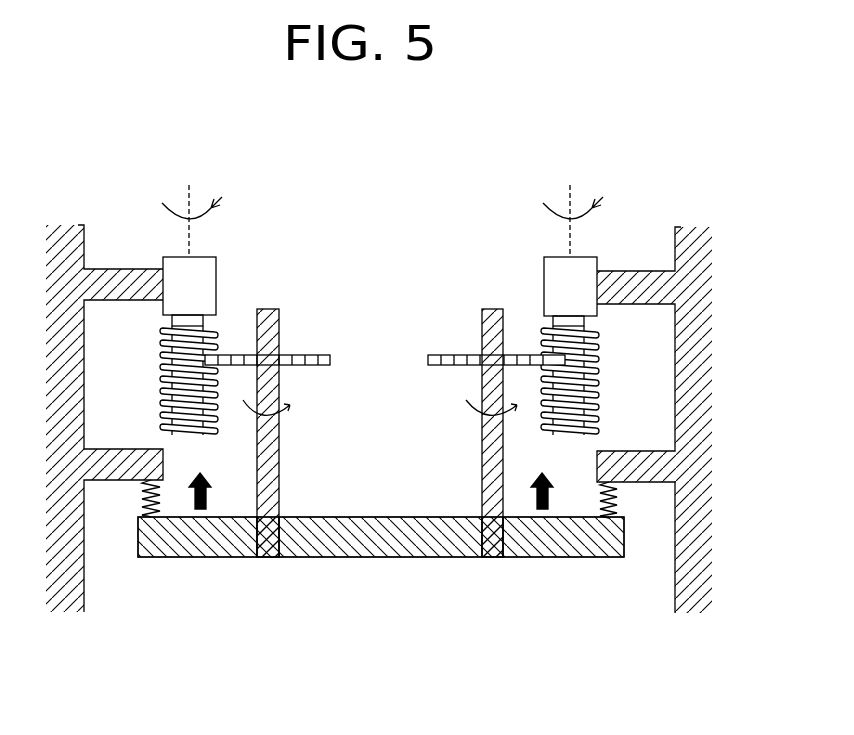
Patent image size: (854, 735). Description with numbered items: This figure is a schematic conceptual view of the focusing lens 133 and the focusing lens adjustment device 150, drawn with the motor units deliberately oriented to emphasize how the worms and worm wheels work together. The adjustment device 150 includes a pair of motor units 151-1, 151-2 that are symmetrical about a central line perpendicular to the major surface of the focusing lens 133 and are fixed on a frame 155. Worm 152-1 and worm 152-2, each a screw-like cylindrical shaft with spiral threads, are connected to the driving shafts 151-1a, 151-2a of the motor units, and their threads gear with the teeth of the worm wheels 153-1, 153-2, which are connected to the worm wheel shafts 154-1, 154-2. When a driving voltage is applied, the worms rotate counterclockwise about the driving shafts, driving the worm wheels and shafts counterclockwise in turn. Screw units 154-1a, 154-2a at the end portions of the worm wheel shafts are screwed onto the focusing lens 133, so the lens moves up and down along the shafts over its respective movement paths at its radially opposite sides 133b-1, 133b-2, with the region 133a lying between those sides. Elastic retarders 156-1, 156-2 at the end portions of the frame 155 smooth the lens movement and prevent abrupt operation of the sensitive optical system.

The focusing lens adjustment device 150 is at (655, 112).
The motor unit M1 151-1 is at (217, 272).
The driving shaft of motor unit M1 151-1a is at (197, 318).
The worm 152-1 is at (165, 377).
The worm wheel 153-1 is at (330, 338).
The worm wheel shaft 154-1 is at (277, 475).
The screw unit 154-1a is at (270, 525).
The elastic retarder 156-1 is at (142, 507).
The side of focusing lens 133b-1 is at (205, 558).
The plate central portion 133a is at (368, 558).
The focusing lens 133 is at (381, 589).
The motor unit M2 151-2 is at (544, 272).
The driving shaft of motor unit M2 151-2a is at (562, 318).
The worm 152-2 is at (595, 378).
The worm wheel 153-2 is at (447, 354).
The worm wheel shaft 154-2 is at (483, 475).
The screw unit 154-2a is at (492, 525).
The elastic retarder 156-2 is at (618, 508).
The side of focusing lens 133b-2 is at (553, 558).
The frame 155 is at (694, 600).